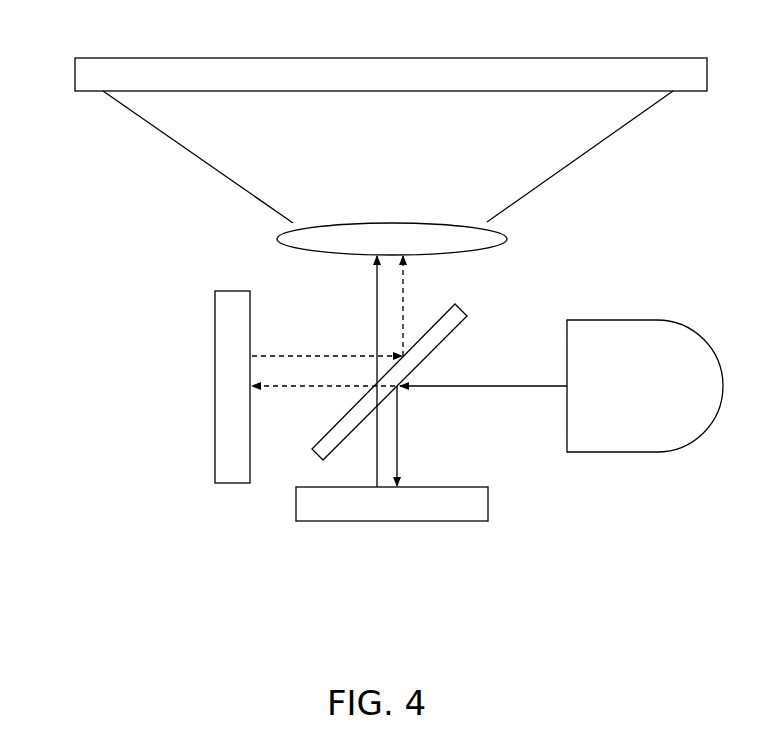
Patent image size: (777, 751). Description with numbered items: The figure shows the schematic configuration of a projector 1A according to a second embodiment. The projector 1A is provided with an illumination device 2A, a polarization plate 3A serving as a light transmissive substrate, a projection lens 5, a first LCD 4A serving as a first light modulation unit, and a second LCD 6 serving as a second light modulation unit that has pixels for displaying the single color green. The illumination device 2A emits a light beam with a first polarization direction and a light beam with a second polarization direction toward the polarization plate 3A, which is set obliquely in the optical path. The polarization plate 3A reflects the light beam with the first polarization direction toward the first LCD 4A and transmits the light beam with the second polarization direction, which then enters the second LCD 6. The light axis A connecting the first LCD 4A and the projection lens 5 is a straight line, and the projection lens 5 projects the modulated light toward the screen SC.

The screen SC is at (114, 67).
The projection lens 5 is at (507, 239).
The second LCD 6 is at (230, 290).
The polarization plate 3A is at (325, 438).
The first LCD 4A is at (488, 500).
The illumination device 2A is at (645, 320).
The light axis A is at (377, 452).
The projector 1A is at (225, 572).